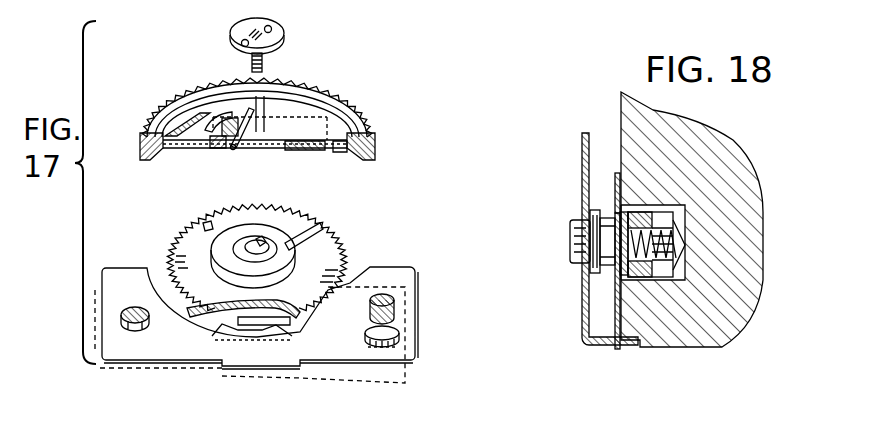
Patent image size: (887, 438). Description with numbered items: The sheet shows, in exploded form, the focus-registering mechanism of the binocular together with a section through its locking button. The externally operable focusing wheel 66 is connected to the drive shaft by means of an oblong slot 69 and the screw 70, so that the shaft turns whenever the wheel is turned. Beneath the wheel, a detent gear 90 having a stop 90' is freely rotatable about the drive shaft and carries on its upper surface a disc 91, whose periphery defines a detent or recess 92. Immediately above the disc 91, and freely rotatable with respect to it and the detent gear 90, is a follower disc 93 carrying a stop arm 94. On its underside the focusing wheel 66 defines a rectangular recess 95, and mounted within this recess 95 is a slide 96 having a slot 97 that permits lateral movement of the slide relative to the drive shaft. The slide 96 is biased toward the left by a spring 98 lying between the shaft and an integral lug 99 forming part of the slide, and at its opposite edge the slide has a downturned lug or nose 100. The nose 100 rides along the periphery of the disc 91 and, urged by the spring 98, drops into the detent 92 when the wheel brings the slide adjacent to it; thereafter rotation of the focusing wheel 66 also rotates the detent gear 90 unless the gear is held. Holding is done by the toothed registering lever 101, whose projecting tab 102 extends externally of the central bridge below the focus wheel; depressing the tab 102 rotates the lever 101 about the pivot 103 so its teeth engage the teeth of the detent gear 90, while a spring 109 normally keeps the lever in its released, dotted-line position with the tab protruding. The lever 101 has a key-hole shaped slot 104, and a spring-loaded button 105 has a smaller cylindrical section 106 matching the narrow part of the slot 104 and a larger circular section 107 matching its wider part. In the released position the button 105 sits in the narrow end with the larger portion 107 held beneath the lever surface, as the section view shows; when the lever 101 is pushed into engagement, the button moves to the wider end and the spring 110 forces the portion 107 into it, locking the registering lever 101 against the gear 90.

In FIG. 17, the focusing wheel 66 is at (334, 96).
In FIG. 17, the oblong slot 69 is at (253, 143).
In FIG. 17, the screw 70 is at (273, 36).
In FIG. 17, the detent gear 90 is at (273, 257).
In FIG. 17, the stop 90' is at (189, 216).
In FIG. 17, the disc 91 is at (227, 278).
In FIG. 17, the detent 92 is at (291, 270).
In FIG. 17, the follower disc 93 is at (232, 262).
In FIG. 17, the stop arm 94 is at (321, 224).
In FIG. 17, the rectangular recess 95 is at (337, 149).
In FIG. 17, the slide 96 is at (230, 130).
In FIG. 17, the slot 97 is at (217, 141).
In FIG. 17, the spring 98 is at (218, 120).
In FIG. 17, the integral lug 99 is at (202, 116).
In FIG. 17, the nose 100 is at (322, 148).
In FIG. 17, the registering lever 101 is at (415, 350).
In FIG. 18, the registering lever 101 is at (616, 290).
In FIG. 17, the projecting tab 102 is at (292, 378).
In FIG. 18, the projecting tab 102 is at (620, 350).
In FIG. 17, the pivot 103 is at (128, 326).
In FIG. 17, the key-hole shaped slot 104 is at (395, 305).
In FIG. 18, the key-hole shaped slot 104 is at (614, 185).
In FIG. 17, the spring-loaded button 105 is at (409, 334).
In FIG. 18, the spring-loaded button 105 is at (567, 268).
In FIG. 17, the smaller cylindrical section 106 is at (398, 322).
In FIG. 18, the smaller cylindrical section 106 is at (601, 240).
In FIG. 17, the larger circular section 107 is at (379, 346).
In FIG. 18, the larger circular section 107 is at (637, 280).
In FIG. 17, the spring 109 is at (265, 338).
In FIG. 18, the spring 110 is at (622, 213).